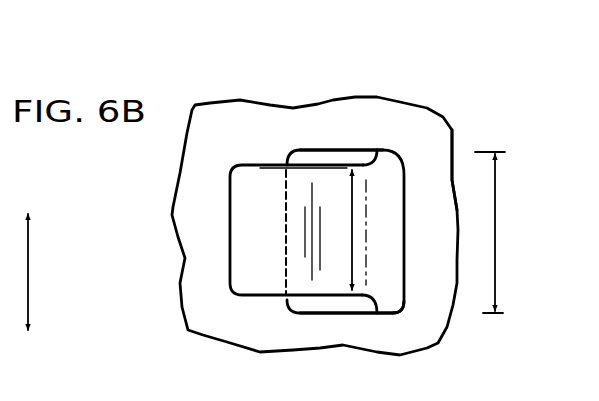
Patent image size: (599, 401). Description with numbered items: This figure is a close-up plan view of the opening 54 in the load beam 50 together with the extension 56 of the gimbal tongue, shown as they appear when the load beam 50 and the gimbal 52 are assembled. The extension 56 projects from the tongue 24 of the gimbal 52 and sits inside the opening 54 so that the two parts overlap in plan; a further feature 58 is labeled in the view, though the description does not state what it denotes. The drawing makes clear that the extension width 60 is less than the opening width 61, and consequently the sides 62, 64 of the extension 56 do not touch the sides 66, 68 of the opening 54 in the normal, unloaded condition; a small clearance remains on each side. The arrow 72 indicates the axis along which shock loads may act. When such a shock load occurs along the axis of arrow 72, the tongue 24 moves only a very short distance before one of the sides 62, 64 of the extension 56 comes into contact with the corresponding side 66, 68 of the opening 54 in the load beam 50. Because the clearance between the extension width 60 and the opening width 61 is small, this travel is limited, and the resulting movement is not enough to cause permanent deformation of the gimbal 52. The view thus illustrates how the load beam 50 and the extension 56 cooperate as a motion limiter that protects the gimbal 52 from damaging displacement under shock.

The tongue 24 is at (390, 180).
The load beam 50 is at (197, 258).
The gimbal 52 is at (382, 243).
The opening 54 is at (358, 150).
The extension 56 is at (333, 203).
The opening 58 is at (248, 272).
The extension width 60 is at (353, 245).
The opening width 61 is at (497, 208).
The side of the extension 62 is at (332, 164).
The side of the extension 64 is at (330, 295).
The side of the opening 66 is at (309, 163).
The side of the opening 68 is at (330, 295).
The arrow 72 is at (53, 272).